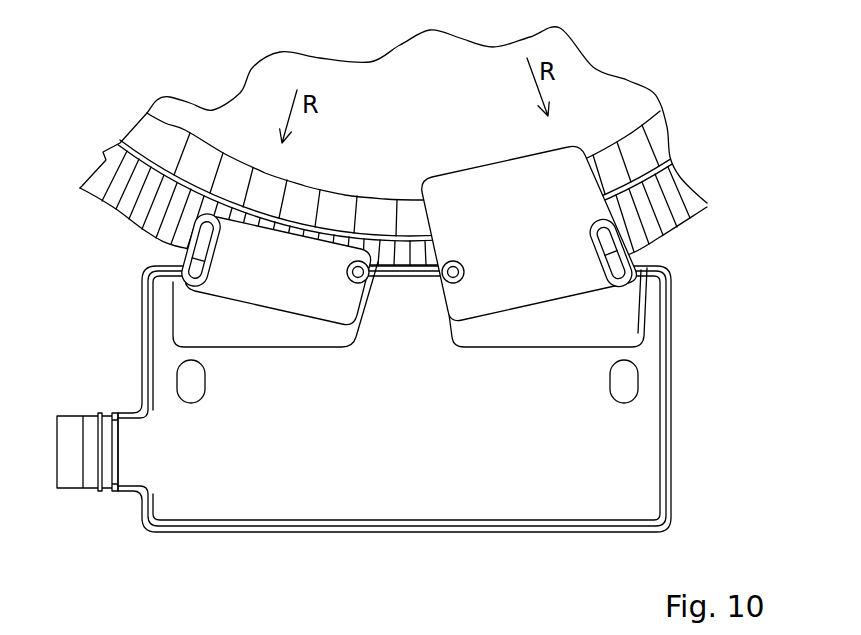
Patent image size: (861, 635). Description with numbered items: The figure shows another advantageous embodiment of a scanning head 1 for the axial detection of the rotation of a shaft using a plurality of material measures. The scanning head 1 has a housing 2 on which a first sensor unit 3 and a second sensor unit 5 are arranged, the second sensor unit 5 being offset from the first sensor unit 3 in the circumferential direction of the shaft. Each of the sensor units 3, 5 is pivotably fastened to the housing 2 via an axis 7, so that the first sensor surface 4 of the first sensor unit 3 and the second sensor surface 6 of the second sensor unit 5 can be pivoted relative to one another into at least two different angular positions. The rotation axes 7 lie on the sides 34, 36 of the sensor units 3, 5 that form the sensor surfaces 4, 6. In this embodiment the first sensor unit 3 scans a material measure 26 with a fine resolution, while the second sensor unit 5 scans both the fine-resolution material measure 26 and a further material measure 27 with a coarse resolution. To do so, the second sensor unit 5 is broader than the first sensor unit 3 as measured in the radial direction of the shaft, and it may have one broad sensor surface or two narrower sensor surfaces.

The scanning head 1 is at (411, 315).
The housing 2 is at (578, 460).
The first sensor unit 3 is at (191, 268).
The first sensor surface 4 is at (147, 260).
The side of the first sensor unit 34 is at (300, 282).
The second sensor unit 5 is at (616, 233).
The second sensor surface 6 is at (688, 264).
The side of the second sensor unit 36 is at (567, 247).
The axis 7 is at (355, 280).
The material measure with fine resolution 26 is at (670, 210).
The material measure with coarse resolution 27 is at (635, 155).